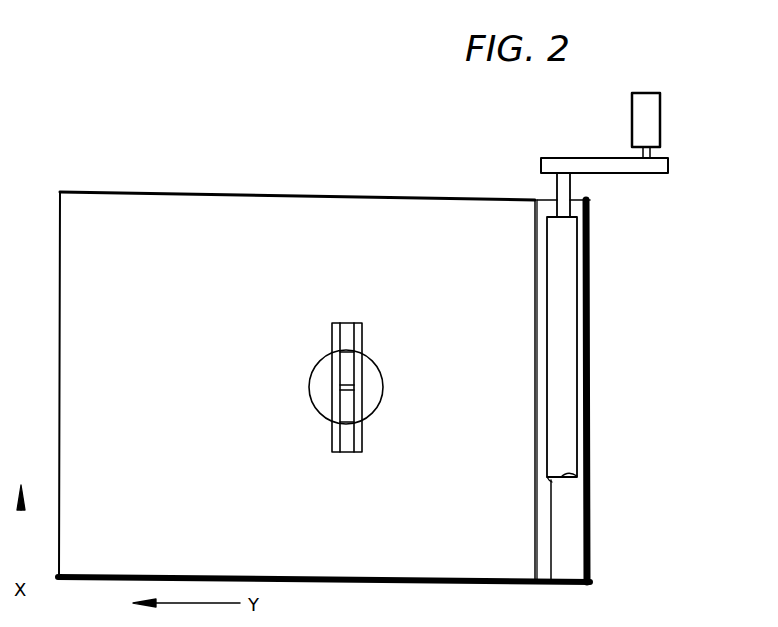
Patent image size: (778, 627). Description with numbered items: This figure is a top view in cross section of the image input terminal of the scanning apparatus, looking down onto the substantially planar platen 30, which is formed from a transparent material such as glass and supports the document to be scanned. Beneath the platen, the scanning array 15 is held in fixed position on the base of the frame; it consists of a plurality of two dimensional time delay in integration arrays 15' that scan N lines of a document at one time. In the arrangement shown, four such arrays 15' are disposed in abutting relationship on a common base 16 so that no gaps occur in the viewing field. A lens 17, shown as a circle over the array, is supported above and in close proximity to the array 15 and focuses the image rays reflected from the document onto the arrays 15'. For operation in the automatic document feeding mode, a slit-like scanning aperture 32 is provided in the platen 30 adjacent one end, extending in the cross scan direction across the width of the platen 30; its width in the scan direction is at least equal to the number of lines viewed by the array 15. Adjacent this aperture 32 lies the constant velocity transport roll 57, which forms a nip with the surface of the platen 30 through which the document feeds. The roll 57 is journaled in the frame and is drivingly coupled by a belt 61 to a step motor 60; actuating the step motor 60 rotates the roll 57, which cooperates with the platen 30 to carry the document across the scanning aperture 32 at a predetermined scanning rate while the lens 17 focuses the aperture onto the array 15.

The scanning array 15 is at (373, 356).
The time delay in integration (T.D.I.) arrays 15' is at (388, 397).
The common base 16 is at (362, 338).
The lens 17 is at (310, 381).
The platen 30 is at (134, 192).
The scanning aperture 32 is at (545, 527).
The constant velocity transport (C.V.T.) roll 57 is at (560, 383).
The step motor 60 is at (632, 110).
The belt 61 is at (570, 158).